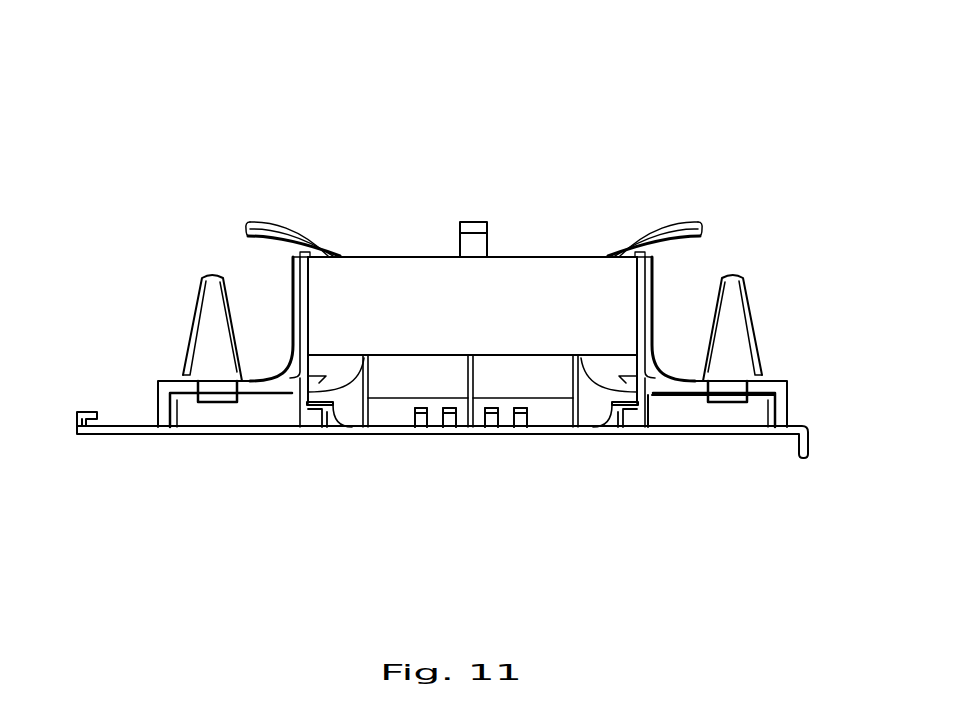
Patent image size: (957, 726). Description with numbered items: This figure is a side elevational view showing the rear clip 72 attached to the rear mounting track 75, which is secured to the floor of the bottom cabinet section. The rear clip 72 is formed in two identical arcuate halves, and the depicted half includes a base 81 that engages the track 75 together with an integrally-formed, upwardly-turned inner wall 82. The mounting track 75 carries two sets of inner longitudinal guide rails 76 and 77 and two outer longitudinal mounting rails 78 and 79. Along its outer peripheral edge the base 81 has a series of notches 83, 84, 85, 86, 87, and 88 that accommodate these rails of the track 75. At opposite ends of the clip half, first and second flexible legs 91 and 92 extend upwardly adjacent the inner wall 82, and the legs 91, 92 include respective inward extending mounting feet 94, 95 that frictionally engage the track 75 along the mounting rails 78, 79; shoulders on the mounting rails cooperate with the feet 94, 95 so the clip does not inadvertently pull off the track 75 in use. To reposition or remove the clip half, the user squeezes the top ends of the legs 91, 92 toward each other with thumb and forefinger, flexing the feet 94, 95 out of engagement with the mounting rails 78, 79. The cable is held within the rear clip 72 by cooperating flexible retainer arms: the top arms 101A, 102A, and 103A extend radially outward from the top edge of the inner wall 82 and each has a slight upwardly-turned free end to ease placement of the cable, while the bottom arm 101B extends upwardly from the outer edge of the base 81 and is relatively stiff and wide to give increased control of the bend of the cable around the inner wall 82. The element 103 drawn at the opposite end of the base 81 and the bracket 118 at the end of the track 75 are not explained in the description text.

The rear clip 72 is at (581, 194).
The rear mounting track 75 is at (130, 425).
The inner longitudinal guide rail 76 is at (449, 427).
The inner longitudinal guide rail 77 is at (520, 427).
The outer longitudinal mounting rail 78 is at (320, 413).
The outer longitudinal mounting rail 79 is at (622, 413).
The base 81 is at (703, 398).
The inner wall 82 is at (400, 283).
The notch 83 is at (340, 410).
The notch 84 is at (423, 407).
The notch 85 is at (456, 407).
The notch 86 is at (492, 407).
The notch 87 is at (522, 407).
The notch 88 is at (607, 427).
The first flexible leg 91 is at (300, 328).
The second flexible leg 92 is at (640, 327).
The mounting foot 94 is at (300, 434).
The mounting foot 95 is at (637, 428).
The top retainer arm 101A is at (254, 222).
The bottom retainer arm 101B is at (203, 323).
The top retainer arm 102A is at (473, 222).
The right post 103 is at (753, 318).
The top retainer arm 103A is at (653, 238).
The end bracket 118 is at (78, 423).